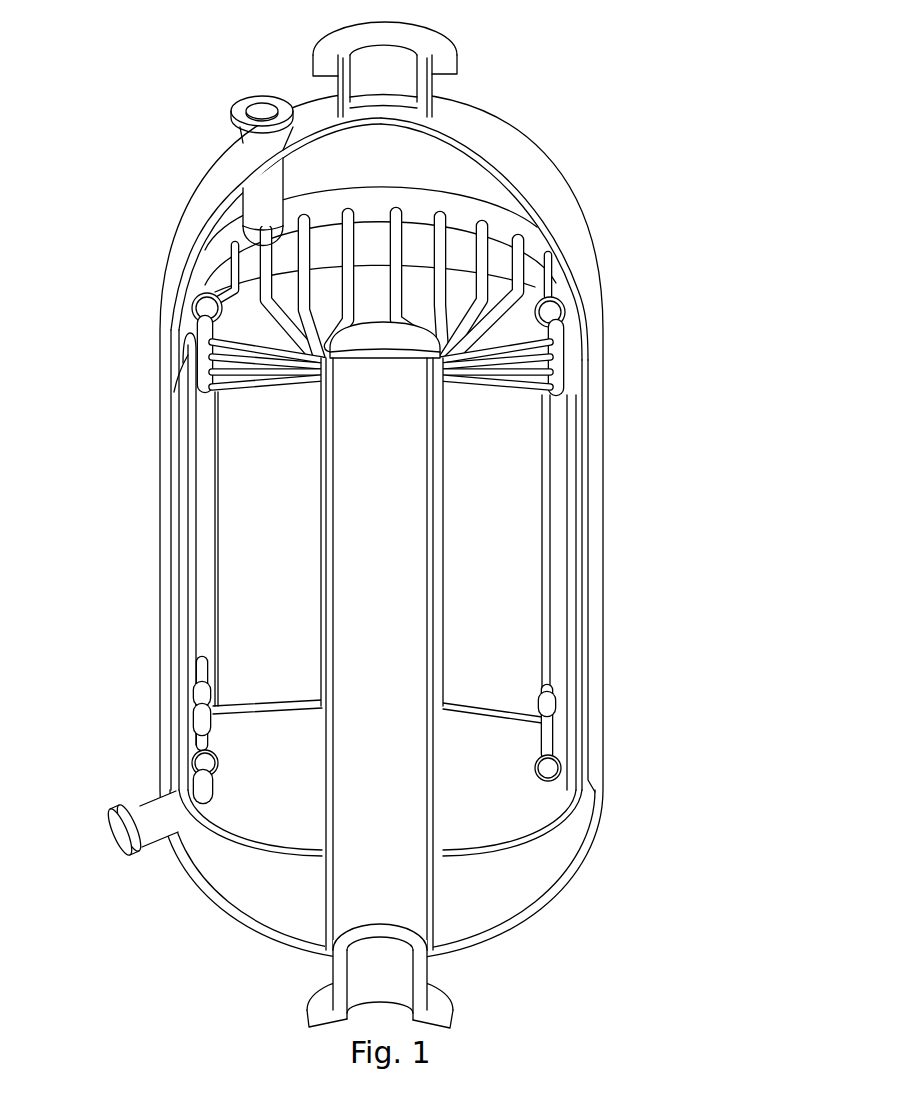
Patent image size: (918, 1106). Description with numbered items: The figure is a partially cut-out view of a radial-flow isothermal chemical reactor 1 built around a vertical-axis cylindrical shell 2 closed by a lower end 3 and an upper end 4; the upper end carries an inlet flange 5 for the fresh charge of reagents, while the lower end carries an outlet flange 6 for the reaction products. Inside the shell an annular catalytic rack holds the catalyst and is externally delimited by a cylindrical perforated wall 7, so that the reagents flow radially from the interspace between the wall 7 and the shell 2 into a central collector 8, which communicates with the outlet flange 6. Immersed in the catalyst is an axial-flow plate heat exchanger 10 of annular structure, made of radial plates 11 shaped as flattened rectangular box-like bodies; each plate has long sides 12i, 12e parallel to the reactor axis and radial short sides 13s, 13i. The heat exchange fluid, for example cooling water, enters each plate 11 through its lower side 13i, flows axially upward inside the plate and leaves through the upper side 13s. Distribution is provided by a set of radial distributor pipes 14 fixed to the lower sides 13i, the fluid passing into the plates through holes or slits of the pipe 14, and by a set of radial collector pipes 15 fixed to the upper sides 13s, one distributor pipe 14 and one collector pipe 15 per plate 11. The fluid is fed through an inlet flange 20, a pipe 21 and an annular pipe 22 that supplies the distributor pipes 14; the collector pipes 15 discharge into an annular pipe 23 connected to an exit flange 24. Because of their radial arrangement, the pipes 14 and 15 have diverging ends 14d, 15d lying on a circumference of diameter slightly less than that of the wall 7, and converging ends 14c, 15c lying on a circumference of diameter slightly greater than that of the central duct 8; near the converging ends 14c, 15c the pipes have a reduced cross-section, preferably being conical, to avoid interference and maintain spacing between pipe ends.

The radial-flow isothermal chemical reactor 1 is at (387, 514).
The cylindrical shell 2 is at (595, 585).
The lower end 3 is at (590, 830).
The upper end 4 is at (548, 172).
The inlet flange 5 is at (447, 40).
The outlet flange 6 is at (445, 1000).
The cylindrical perforated wall 7 is at (185, 400).
The central collector 8 is at (335, 445).
The axial-flow plate heat exchanger 10 is at (200, 571).
The radial plates 11 is at (228, 600).
The long side (internal) 12i is at (320, 500).
The long side (external) 12e is at (222, 574).
The upper side 13s is at (472, 392).
The lower side 13i is at (482, 704).
The distributor pipe 14 is at (536, 718).
The converging end of distributor pipe 14c is at (317, 699).
The diverging end of distributor pipe 14d is at (230, 699).
The collector pipe 15 is at (506, 392).
The converging end of collector pipe 15c is at (322, 400).
The diverging end of collector pipe 15d is at (234, 401).
The inlet flange (heat exchange fluid) 20 is at (118, 818).
The pipe 21 is at (205, 795).
The annular pipe 22 is at (215, 742).
The annular pipe 23 is at (367, 205).
The exit flange 24 is at (248, 100).